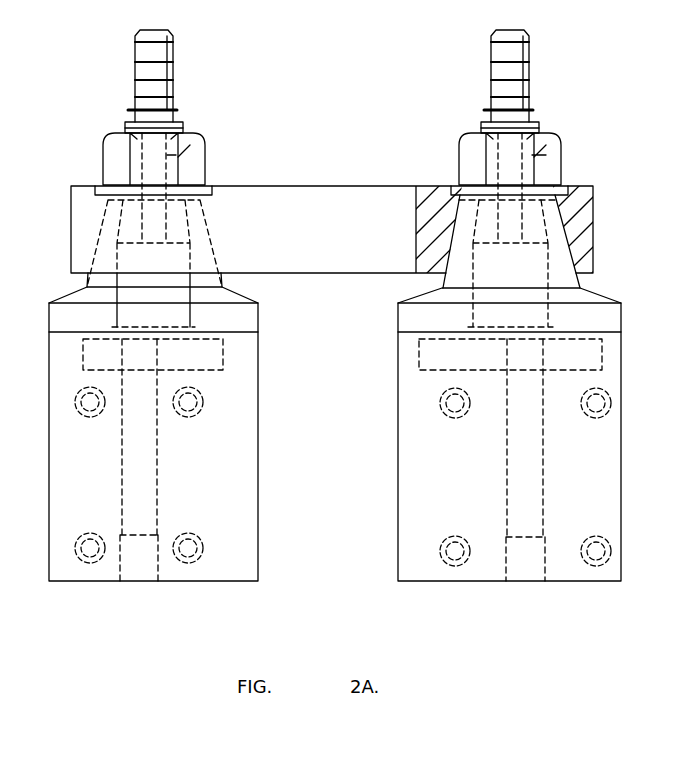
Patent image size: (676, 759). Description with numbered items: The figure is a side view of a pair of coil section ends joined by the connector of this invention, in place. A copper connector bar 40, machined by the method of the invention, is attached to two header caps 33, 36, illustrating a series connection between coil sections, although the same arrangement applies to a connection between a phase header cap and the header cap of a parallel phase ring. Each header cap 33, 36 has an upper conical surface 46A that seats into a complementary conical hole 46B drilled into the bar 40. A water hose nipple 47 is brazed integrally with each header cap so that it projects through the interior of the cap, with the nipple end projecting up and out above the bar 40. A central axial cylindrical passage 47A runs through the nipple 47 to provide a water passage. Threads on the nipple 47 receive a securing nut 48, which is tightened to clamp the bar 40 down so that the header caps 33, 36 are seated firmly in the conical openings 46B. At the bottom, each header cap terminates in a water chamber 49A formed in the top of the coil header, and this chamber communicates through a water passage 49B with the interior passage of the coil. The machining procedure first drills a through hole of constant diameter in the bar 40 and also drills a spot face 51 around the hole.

The copper connector bar 40 is at (387, 187).
The water hose nipple 47 is at (173, 53).
The central axial cylindrical passage 47A is at (190, 145).
The securing nut 48 is at (197, 158).
The spot face 51 is at (98, 185).
The upper conical surface 46A is at (455, 232).
The conical holes 46B is at (212, 252).
The header cap 33 is at (222, 287).
The header cap 36 is at (440, 285).
The water chamber 49A is at (210, 358).
The water passage 49B is at (148, 445).